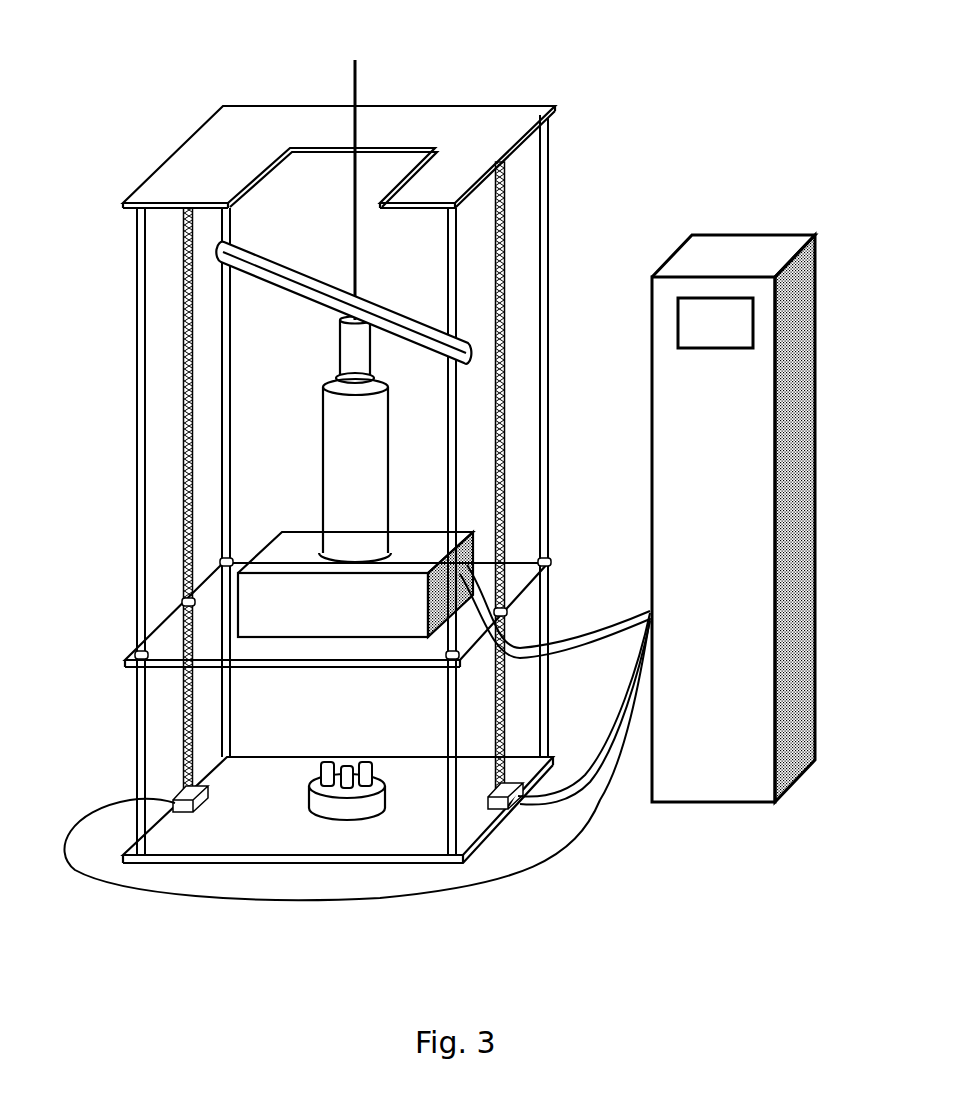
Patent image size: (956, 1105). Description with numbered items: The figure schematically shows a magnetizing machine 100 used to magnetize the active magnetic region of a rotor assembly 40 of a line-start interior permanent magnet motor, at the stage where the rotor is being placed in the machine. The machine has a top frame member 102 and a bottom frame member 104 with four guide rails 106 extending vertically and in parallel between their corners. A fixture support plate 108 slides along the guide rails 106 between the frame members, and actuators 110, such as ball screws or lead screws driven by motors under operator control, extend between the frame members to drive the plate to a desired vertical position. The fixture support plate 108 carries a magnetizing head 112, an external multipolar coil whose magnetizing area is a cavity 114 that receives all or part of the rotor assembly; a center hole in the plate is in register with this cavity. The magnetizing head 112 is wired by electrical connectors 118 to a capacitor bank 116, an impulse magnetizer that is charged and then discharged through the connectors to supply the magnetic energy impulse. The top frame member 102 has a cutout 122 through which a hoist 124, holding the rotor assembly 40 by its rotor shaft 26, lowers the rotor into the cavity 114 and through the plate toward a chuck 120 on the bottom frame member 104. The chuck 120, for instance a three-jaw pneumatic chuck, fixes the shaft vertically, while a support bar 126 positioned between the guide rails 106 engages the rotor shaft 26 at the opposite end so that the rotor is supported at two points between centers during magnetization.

The magnetizing machine 100 is at (565, 148).
The top frame member 102 is at (228, 118).
The bottom frame member 104 is at (255, 863).
The guide rails 106 is at (135, 432).
The fixture support plate 108 is at (210, 638).
The actuators 110 is at (182, 390).
The magnetizing head 112 is at (356, 622).
The cavity 114 is at (390, 555).
The capacitor bank 116 is at (730, 515).
The electrical connectors 118 is at (535, 645).
The chuck 120 is at (350, 797).
The cutout 122 is at (292, 147).
The hoist 124 is at (353, 90).
The support bar 126 is at (335, 290).
The rotor shaft 26 is at (352, 352).
The rotor assembly 40 is at (345, 452).